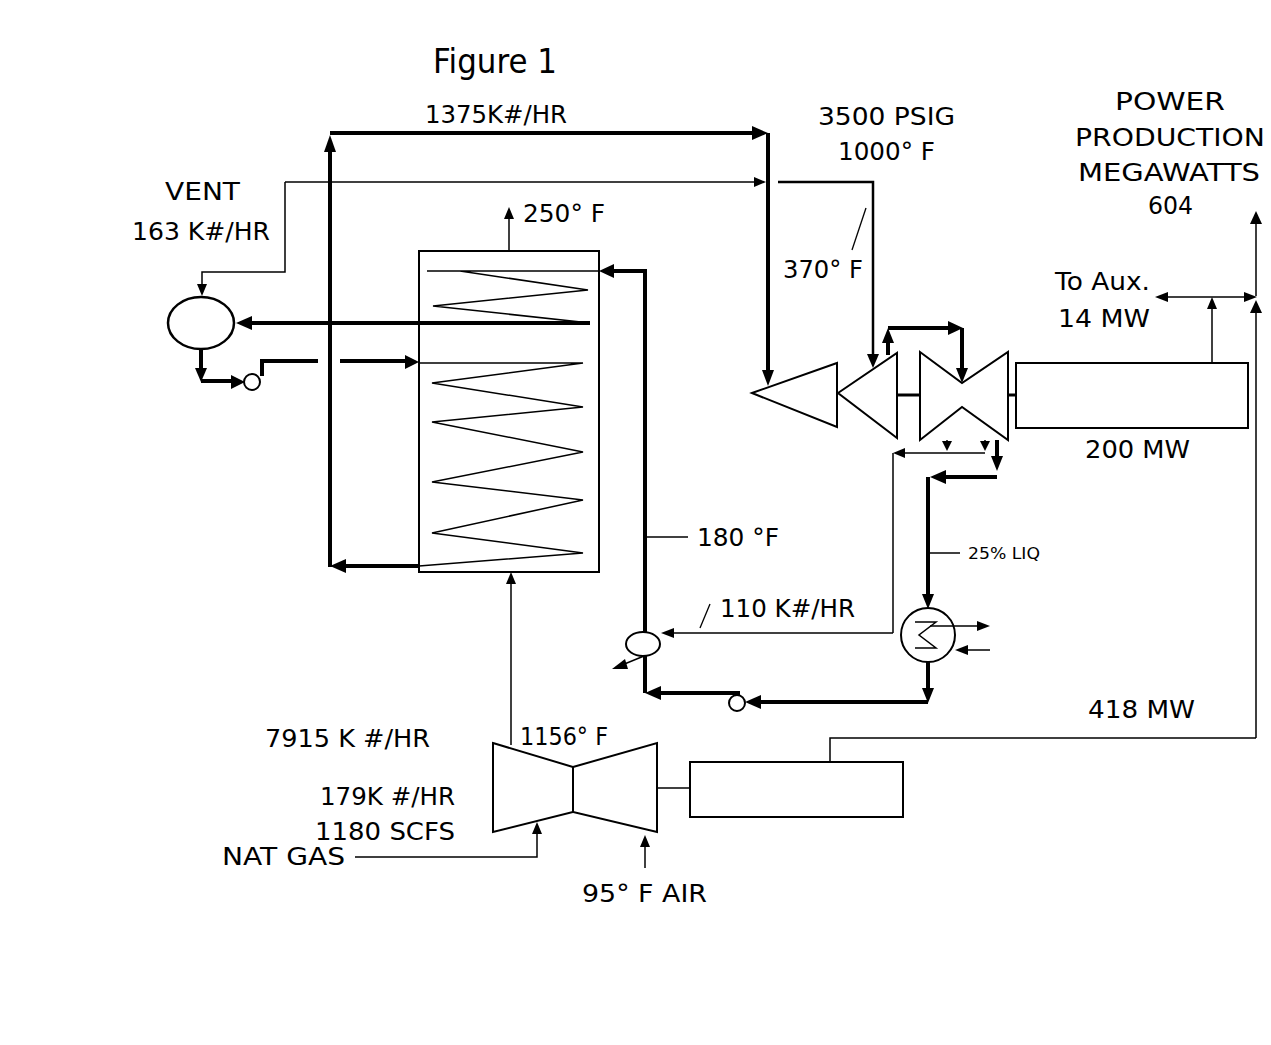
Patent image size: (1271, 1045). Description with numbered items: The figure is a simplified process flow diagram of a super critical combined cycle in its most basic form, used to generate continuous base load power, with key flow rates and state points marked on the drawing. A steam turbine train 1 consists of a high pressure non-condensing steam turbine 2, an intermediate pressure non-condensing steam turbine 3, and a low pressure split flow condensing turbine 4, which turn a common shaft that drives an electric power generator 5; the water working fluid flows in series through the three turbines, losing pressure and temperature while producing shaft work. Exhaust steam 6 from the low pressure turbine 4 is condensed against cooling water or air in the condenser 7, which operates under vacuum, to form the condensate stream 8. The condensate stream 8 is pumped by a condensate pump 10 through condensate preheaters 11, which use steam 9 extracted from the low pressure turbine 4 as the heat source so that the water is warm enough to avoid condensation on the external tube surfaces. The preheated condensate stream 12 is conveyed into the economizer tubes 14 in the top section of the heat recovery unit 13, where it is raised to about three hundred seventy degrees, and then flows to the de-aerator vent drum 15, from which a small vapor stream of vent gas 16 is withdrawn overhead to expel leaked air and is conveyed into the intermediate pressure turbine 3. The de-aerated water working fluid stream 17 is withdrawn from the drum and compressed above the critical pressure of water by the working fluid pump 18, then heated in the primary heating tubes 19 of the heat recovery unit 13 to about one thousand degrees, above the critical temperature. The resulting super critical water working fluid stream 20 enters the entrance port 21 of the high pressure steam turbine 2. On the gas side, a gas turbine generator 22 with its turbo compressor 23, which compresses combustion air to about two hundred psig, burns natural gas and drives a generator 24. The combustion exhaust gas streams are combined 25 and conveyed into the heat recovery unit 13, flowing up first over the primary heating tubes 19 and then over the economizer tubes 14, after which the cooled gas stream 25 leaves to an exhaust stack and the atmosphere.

The steam turbine train 1 is at (880, 401).
The high pressure non-condensing steam turbine 2 is at (794, 395).
The intermediate pressure non-condensing steam turbine 3 is at (903, 379).
The low pressure split flow condensing turbine 4 is at (964, 396).
The electric power generator 5 is at (1132, 395).
The exhaust steam 6 is at (931, 518).
The condenser 7 is at (954, 608).
The condensate stream 8 is at (818, 701).
The extracted steam 9 is at (893, 556).
The condensate pump 10 is at (743, 693).
The condensate preheaters 11 is at (651, 631).
The preheated condensate stream 12 is at (645, 444).
The heat recovery unit 13 is at (418, 252).
The economizer tubes 14 is at (430, 298).
The de-aerator vent drum 15 is at (201, 323).
The vent gas 16 is at (196, 287).
The de-aerated water working fluid stream 17 is at (180, 361).
The working fluid pump 18 is at (244, 394).
The primary heating tubes 19 is at (430, 418).
The super critical water working fluid stream 20 is at (328, 459).
The entrance port 21 is at (765, 382).
The gas turbine generator 22 is at (615, 787).
The turbo compressor 23 is at (533, 787).
The generator 24 is at (796, 789).
The combined combustion exhaust gas stream 25 is at (509, 668).